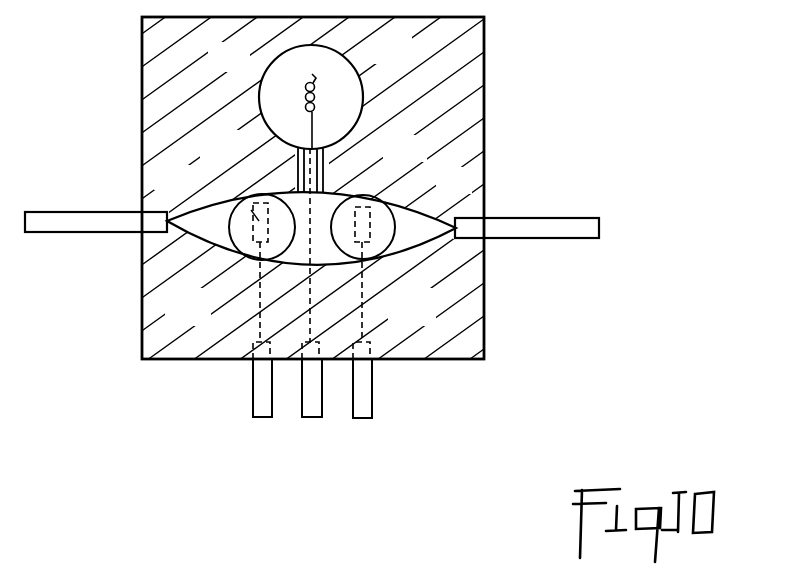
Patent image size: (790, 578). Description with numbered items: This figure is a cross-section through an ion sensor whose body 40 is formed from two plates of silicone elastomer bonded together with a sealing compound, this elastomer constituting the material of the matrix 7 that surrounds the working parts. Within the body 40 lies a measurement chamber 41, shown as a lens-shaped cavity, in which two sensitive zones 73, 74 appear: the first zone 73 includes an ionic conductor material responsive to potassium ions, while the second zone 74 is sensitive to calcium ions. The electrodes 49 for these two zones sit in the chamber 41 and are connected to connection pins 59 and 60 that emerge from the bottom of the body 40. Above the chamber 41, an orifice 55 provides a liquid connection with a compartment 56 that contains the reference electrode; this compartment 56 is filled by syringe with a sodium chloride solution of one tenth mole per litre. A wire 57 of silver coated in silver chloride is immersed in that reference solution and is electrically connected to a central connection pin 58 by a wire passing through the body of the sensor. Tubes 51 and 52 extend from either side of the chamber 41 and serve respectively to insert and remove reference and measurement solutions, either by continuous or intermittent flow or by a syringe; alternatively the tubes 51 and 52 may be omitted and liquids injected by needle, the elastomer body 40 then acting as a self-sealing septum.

The matrix 7 is at (473, 325).
The body 40 is at (486, 80).
The measurement chamber 41 is at (417, 222).
The electrodes 49 is at (240, 194).
The tube 51 is at (547, 222).
The tube 52 is at (62, 222).
The orifice 55 is at (296, 165).
The compartment 56 is at (335, 69).
The wire 57 is at (300, 90).
The connection pin 58 is at (312, 405).
The connection pin 59 is at (258, 405).
The connection pin 60 is at (363, 407).
The sensitive zone z3 73 is at (251, 225).
The sensitive zone z4 74 is at (377, 238).